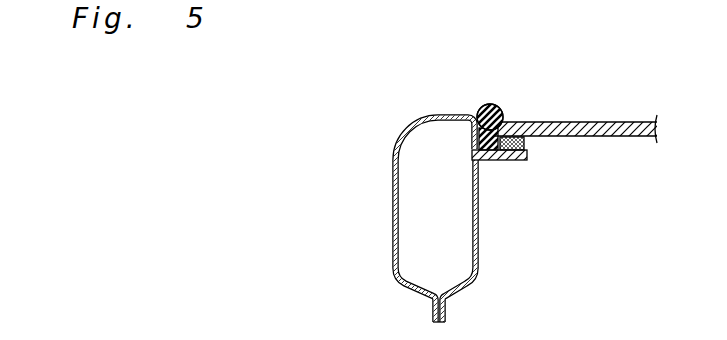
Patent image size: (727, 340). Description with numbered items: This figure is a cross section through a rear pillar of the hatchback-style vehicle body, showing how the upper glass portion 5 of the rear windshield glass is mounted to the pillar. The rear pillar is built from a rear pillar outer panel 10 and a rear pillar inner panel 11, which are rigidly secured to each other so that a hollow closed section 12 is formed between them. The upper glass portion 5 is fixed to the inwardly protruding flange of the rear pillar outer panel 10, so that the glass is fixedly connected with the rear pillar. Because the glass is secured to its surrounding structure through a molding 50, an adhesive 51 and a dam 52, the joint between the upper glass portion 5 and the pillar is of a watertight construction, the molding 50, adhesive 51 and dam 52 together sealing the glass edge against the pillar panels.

The upper glass portion 5 is at (603, 121).
The rear pillar outer panel 10 is at (393, 168).
The rear pillar inner panel 11 is at (478, 256).
The closed section 12 is at (427, 180).
The molding 50 is at (491, 104).
The adhesive 51 is at (500, 161).
The dam 52 is at (524, 150).